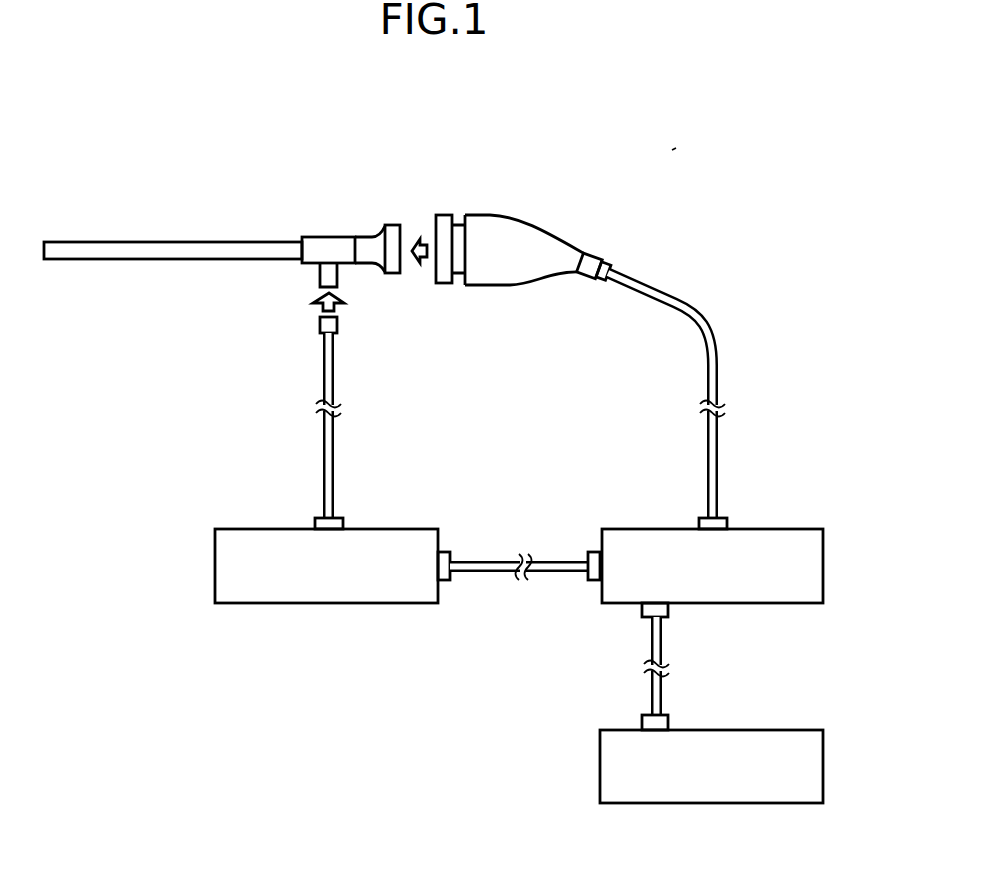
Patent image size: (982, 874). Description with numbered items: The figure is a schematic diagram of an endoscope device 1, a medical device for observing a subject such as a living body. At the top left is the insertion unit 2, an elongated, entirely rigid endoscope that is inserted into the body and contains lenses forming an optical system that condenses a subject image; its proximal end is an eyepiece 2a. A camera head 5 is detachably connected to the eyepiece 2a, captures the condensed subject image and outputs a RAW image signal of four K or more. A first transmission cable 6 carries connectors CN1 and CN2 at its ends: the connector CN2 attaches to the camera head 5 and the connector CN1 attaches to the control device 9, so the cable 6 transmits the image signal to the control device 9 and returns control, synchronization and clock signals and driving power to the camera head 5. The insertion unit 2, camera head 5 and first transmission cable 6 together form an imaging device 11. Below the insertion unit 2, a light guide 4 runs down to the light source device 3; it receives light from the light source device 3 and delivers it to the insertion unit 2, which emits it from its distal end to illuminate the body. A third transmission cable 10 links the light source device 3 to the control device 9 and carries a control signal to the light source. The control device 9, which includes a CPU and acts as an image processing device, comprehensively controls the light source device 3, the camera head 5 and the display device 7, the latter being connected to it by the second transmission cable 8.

The endoscope device 1 is at (676, 150).
The insertion unit 2 is at (250, 247).
The eyepiece 2a is at (393, 225).
The light source device 3 is at (383, 529).
The light guide 4 is at (323, 468).
The camera head 5 is at (487, 232).
The first transmission cable 6 is at (713, 367).
The display device 7 is at (774, 730).
The second transmission cable 8 is at (662, 641).
The control device 9 is at (775, 529).
The third transmission cable 10 is at (559, 562).
The imaging device 11 is at (431, 328).
The connector CN1 is at (722, 515).
The connector CN2 is at (595, 278).